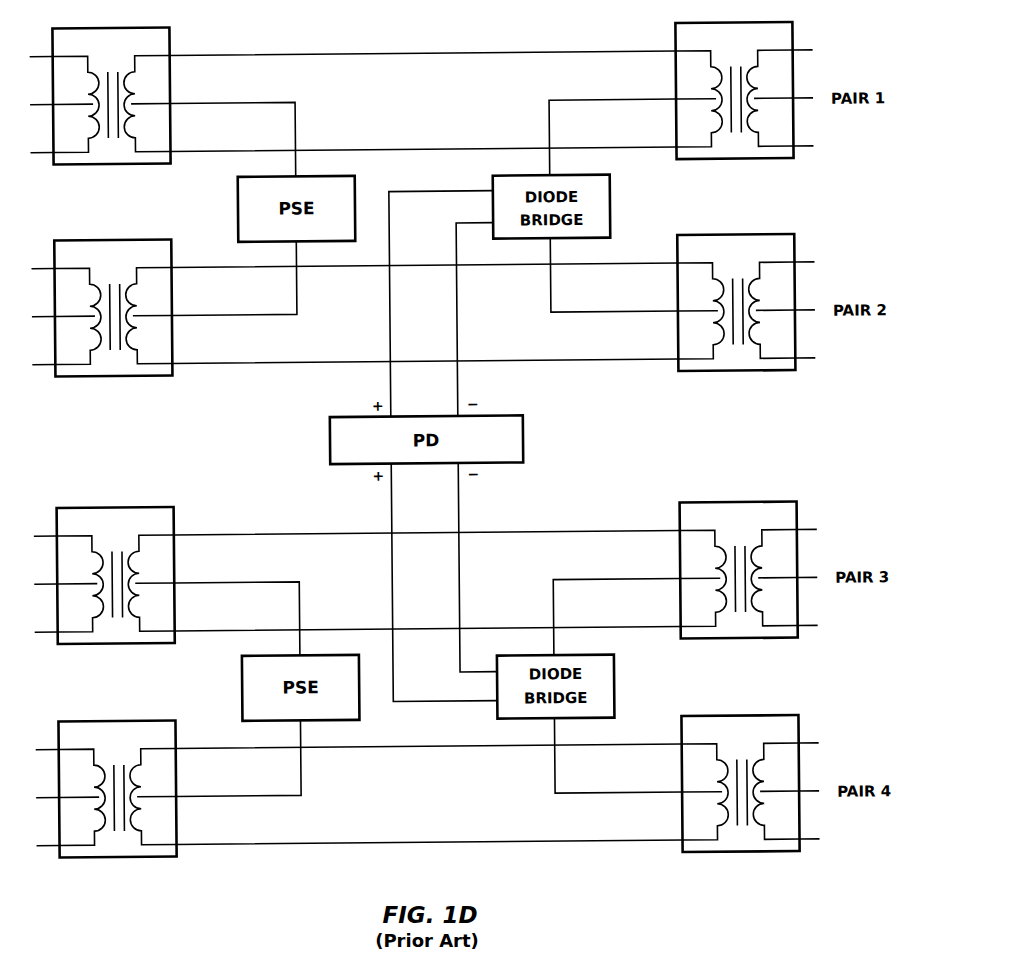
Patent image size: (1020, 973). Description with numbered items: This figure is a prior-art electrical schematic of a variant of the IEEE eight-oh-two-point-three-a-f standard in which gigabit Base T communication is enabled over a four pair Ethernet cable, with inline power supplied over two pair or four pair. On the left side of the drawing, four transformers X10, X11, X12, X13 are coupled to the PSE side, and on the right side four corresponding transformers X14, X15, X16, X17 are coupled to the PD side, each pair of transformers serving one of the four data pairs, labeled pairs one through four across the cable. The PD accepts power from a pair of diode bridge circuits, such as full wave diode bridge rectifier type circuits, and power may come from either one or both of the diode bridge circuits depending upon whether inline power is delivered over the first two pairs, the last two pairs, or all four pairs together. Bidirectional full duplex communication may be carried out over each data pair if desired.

The transformer X10 is at (111, 95).
The transformer X11 is at (113, 307).
The transformer X12 is at (115, 575).
The transformer X13 is at (117, 788).
The transformer X14 is at (734, 91).
The transformer X15 is at (736, 302).
The transformer X16 is at (738, 570).
The transformer X17 is at (740, 783).